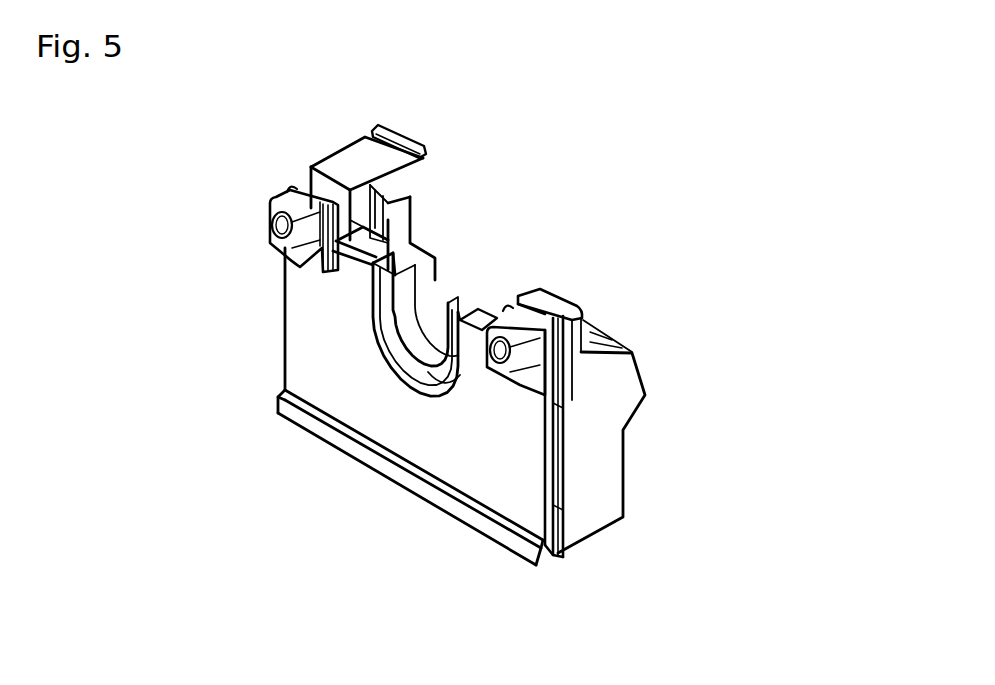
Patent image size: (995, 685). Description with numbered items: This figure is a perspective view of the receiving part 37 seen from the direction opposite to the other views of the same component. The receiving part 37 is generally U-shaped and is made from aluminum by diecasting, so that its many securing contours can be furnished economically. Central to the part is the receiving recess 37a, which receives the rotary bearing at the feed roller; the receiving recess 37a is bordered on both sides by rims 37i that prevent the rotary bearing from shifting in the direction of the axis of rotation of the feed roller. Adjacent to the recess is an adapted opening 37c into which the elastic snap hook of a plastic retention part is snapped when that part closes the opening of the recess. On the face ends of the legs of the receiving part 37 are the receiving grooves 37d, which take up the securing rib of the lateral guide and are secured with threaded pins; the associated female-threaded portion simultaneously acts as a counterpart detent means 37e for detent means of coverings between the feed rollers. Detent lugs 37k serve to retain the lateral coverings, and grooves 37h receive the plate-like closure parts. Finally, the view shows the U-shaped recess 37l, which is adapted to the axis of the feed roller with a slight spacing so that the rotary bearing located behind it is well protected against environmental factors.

The receiving part 37 is at (775, 118).
The receiving recess 37a is at (466, 280).
The opening 37c is at (375, 220).
The receiving grooves 37d is at (312, 172).
The counterpart detent means 37e is at (285, 194).
The grooves 37h is at (563, 486).
The rims 37i is at (415, 325).
The detent lugs 37k is at (373, 132).
The U-shaped recess 37l is at (377, 330).